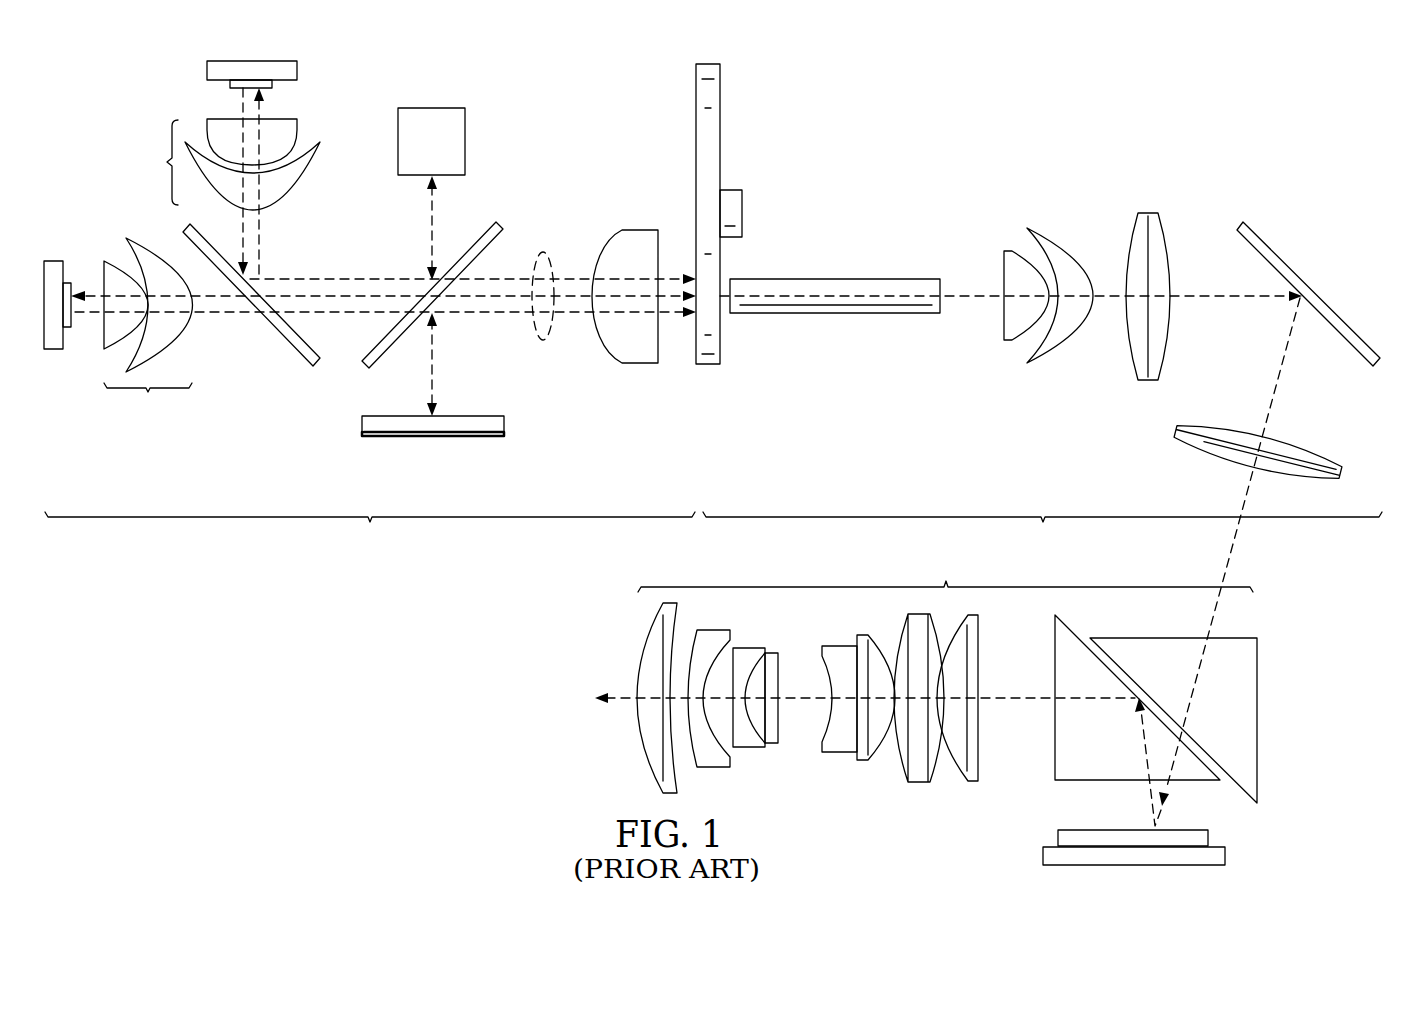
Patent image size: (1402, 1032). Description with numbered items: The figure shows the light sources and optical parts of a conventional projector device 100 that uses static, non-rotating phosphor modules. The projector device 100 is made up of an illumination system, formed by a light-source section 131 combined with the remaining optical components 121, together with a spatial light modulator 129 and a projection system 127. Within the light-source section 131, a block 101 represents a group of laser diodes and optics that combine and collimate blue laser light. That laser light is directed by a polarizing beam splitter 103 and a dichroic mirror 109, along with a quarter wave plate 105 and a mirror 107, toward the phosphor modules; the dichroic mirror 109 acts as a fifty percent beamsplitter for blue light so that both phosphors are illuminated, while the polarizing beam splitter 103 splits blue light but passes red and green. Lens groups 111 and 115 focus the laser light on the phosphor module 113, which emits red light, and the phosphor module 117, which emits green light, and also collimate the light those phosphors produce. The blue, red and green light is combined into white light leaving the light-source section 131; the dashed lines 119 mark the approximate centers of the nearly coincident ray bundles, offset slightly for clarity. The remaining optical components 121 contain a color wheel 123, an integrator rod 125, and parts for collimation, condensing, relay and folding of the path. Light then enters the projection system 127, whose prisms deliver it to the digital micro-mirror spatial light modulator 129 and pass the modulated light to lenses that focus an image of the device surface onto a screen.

The projector device 100 is at (1090, 86).
The laser diode block 101 is at (397, 136).
The polarizing beam splitter 103 is at (455, 258).
The quarter wave plate 105 is at (368, 423).
The mirror 107 is at (366, 436).
The dichroic mirror 109 is at (280, 336).
The lens group 111 is at (219, 164).
The phosphor module 113 is at (197, 66).
The lens group 115 is at (148, 331).
The phosphor module 117 is at (47, 252).
The dashed lines 119 is at (543, 252).
The remaining optical components of the illumination system 121 is at (1042, 386).
The color wheel 123 is at (722, 128).
The integrator rod 125 is at (836, 279).
The projection system 127 is at (924, 670).
The spatial light modulator 129 is at (1205, 874).
The illumination system light-source section 131 is at (370, 535).